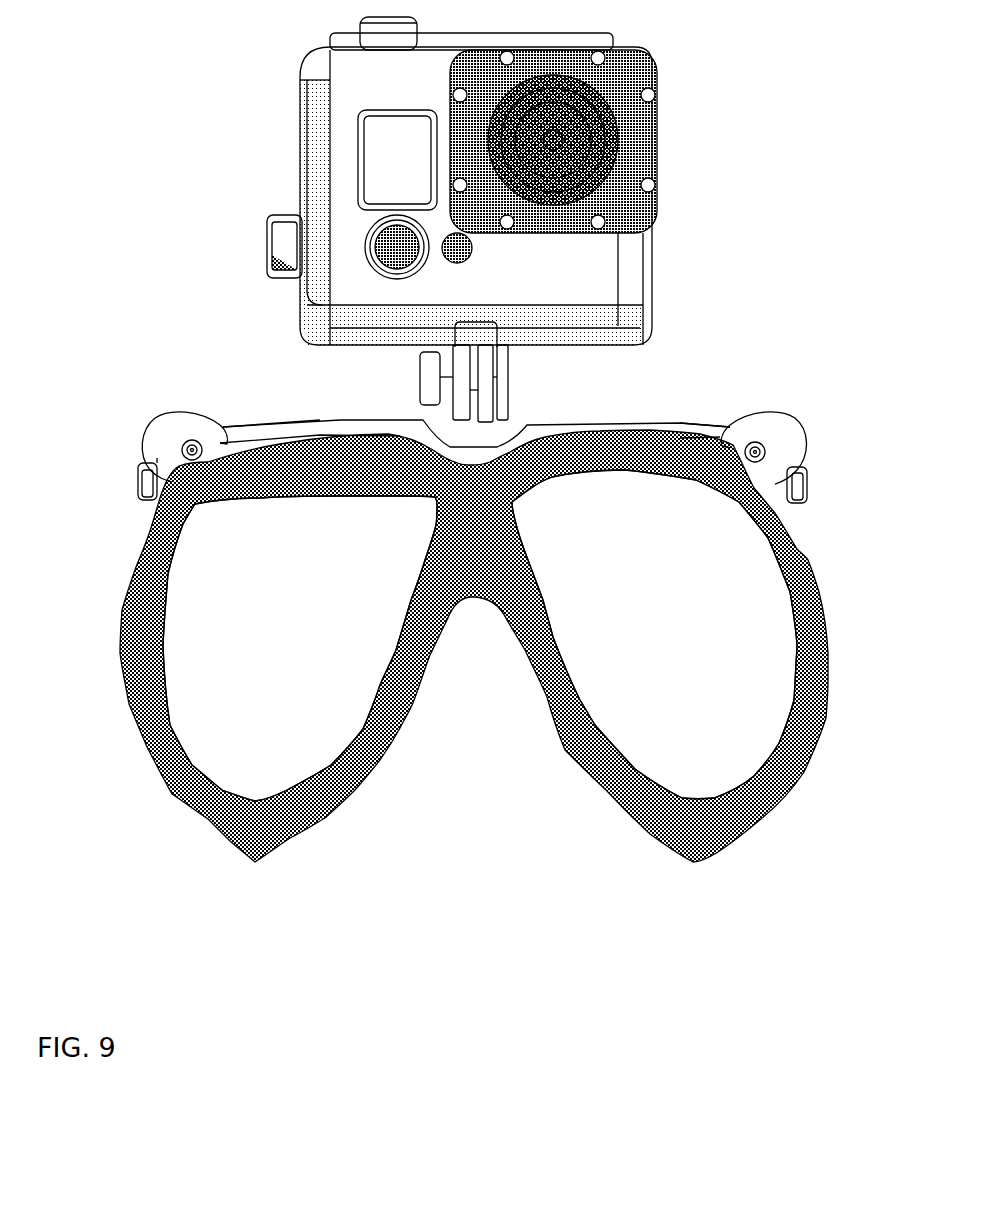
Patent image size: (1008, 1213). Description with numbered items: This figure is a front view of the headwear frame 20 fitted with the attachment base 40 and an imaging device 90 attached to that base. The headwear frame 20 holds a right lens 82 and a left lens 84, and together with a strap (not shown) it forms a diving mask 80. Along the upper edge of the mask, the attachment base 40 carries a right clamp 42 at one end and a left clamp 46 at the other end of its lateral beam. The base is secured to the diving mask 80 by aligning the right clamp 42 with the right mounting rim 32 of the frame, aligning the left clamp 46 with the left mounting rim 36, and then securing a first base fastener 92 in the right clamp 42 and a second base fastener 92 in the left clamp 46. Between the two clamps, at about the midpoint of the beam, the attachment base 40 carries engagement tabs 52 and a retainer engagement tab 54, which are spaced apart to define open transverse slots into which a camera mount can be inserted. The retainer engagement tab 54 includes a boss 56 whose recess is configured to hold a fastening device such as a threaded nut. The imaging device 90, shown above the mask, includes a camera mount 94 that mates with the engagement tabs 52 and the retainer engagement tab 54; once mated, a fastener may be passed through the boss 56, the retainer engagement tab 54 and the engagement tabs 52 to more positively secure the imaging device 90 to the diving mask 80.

The headwear frame 20 is at (186, 812).
The right mounting rim 32 is at (153, 503).
The left mounting rim 36 is at (793, 507).
The attachment base 40 is at (268, 427).
The right clamp 42 is at (173, 425).
The left clamp 46 is at (780, 425).
The engagement tabs 52 is at (503, 390).
The retainer engagement tab 54 is at (447, 405).
The boss 56 is at (428, 377).
The diving mask 80 is at (408, 845).
The right lens 82 is at (305, 634).
The left lens 84 is at (676, 634).
The imaging device 90 is at (647, 230).
The base fastener 92 is at (183, 450).
The camera mount 94 is at (487, 345).